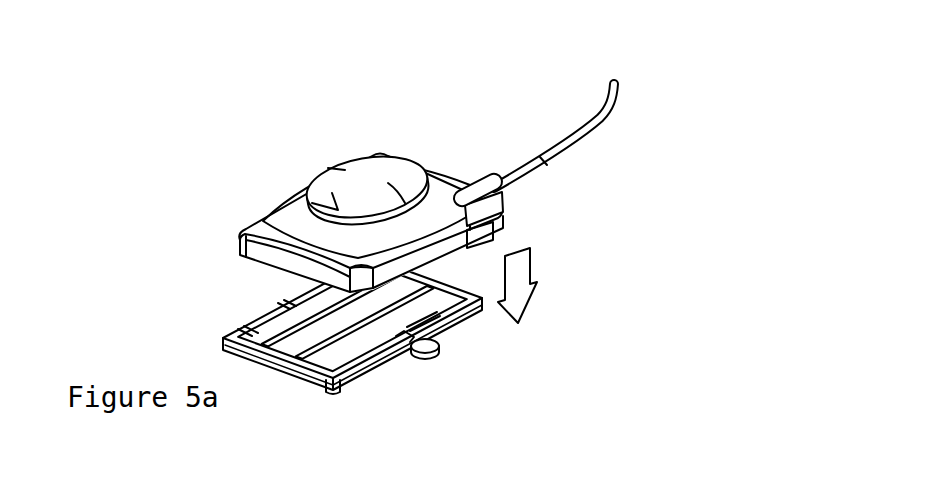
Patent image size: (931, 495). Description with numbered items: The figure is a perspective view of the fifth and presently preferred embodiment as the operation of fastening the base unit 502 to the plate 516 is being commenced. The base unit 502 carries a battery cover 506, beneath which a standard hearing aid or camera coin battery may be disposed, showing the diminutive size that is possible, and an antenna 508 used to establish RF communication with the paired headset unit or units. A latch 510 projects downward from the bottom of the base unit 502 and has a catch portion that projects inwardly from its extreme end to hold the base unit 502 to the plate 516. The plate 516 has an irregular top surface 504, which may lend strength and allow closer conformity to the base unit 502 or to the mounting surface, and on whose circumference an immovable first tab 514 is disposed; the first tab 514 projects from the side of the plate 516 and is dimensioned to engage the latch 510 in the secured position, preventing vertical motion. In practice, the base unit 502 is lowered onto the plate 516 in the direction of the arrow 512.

The base unit 502 is at (288, 217).
The top surface 504 is at (253, 327).
The battery cover 506 is at (370, 171).
The antenna 508 is at (592, 132).
The latch 510 is at (498, 229).
The arrow 512 is at (537, 270).
The first tab 514 is at (460, 315).
The plate 516 is at (353, 383).